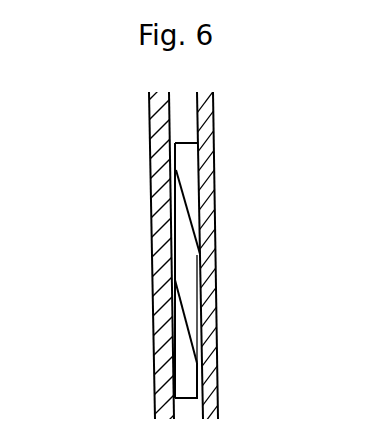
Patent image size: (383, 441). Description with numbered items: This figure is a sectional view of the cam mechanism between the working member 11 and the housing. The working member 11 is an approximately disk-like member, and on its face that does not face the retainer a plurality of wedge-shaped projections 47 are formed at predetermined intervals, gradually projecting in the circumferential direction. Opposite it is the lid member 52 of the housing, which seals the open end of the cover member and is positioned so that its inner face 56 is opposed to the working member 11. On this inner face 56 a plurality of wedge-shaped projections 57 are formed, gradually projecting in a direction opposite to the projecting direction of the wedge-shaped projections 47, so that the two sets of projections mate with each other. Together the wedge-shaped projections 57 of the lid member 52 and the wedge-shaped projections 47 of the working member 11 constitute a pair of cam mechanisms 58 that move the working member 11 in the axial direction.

The working member 11 is at (150, 257).
The lid member 52 is at (213, 140).
The wedge-shaped projections 47 is at (190, 333).
The inner face 56 is at (192, 199).
The wedge-shaped projections 57 is at (175, 205).
The cam mechanisms 58 is at (196, 292).